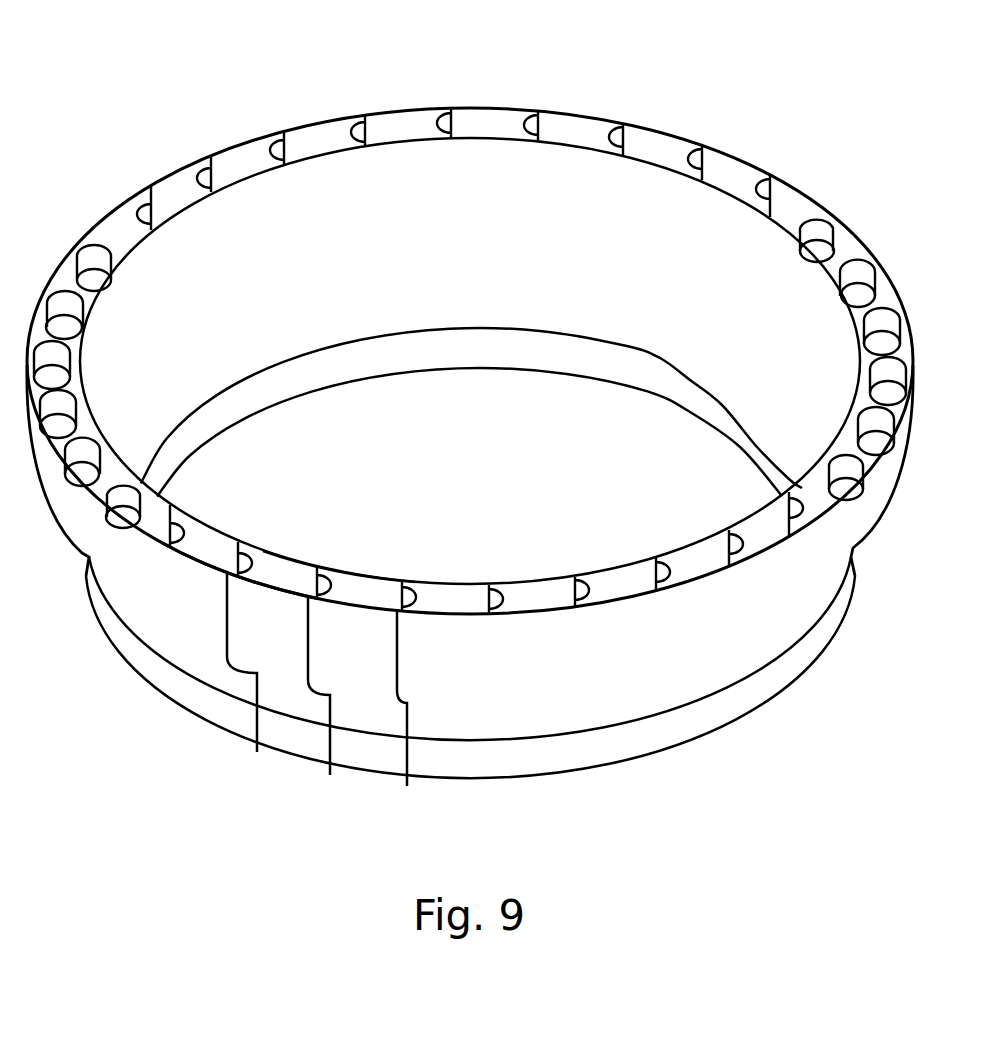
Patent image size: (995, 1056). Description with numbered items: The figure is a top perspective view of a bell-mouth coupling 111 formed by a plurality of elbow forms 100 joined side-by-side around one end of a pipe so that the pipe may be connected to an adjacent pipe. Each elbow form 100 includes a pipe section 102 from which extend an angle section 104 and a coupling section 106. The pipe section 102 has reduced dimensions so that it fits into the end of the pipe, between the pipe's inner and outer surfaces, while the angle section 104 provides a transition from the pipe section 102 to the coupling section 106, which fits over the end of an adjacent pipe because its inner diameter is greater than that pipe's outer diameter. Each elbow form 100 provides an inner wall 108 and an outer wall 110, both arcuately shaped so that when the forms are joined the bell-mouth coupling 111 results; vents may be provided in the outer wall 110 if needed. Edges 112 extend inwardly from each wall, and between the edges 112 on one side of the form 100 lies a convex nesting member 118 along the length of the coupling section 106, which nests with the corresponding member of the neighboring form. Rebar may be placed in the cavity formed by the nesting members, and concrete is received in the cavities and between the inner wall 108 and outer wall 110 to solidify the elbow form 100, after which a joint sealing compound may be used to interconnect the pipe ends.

The elbow form 100 is at (218, 532).
The pipe section 102 is at (368, 757).
The angle section 104 is at (317, 690).
The coupling section 106 is at (250, 615).
The inner wall 108 is at (285, 558).
The outer wall 110 is at (290, 591).
The bell-mouth coupling 111 is at (690, 98).
The edges 112 is at (250, 553).
The convex nesting member 118 is at (342, 575).